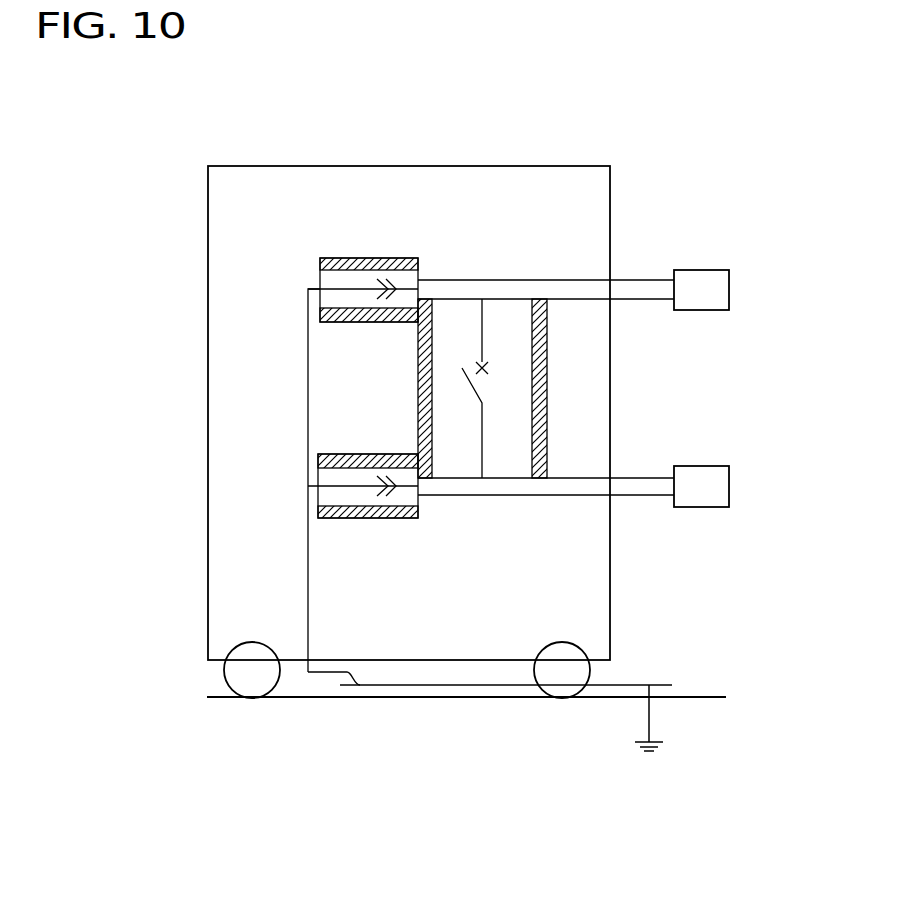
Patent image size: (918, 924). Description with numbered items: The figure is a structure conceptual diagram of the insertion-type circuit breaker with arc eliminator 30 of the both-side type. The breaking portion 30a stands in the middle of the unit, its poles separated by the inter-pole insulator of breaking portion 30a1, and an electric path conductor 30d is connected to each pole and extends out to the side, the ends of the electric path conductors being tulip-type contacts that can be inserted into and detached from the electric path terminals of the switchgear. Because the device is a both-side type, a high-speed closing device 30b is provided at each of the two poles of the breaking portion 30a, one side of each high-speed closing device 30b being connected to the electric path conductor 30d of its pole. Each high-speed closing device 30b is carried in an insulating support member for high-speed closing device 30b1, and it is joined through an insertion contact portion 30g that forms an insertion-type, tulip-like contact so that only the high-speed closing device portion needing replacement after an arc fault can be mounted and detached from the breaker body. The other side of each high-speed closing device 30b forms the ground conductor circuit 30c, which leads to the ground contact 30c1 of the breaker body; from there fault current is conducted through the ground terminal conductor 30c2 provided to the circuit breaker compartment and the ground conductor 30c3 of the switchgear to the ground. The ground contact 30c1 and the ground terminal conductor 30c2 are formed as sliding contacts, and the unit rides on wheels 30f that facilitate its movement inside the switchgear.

The insertion-type circuit breaker with arc eliminator (both-side type) 30 is at (537, 166).
The breaking portion 30a is at (483, 383).
The inter-pole insulator of breaking portion 30a1 is at (543, 430).
The high-speed closing device 30b is at (356, 281).
The insulating support member for high-speed closing device 30b1 is at (352, 258).
The ground conductor circuit 30c is at (308, 381).
The ground contact 30c1 is at (365, 683).
The ground terminal conductor 30c2 is at (453, 688).
The ground conductor 30c3 is at (650, 724).
The electric path conductor 30d is at (729, 292).
The wheel 30f is at (225, 668).
The insertion contact portion 30g is at (389, 276).